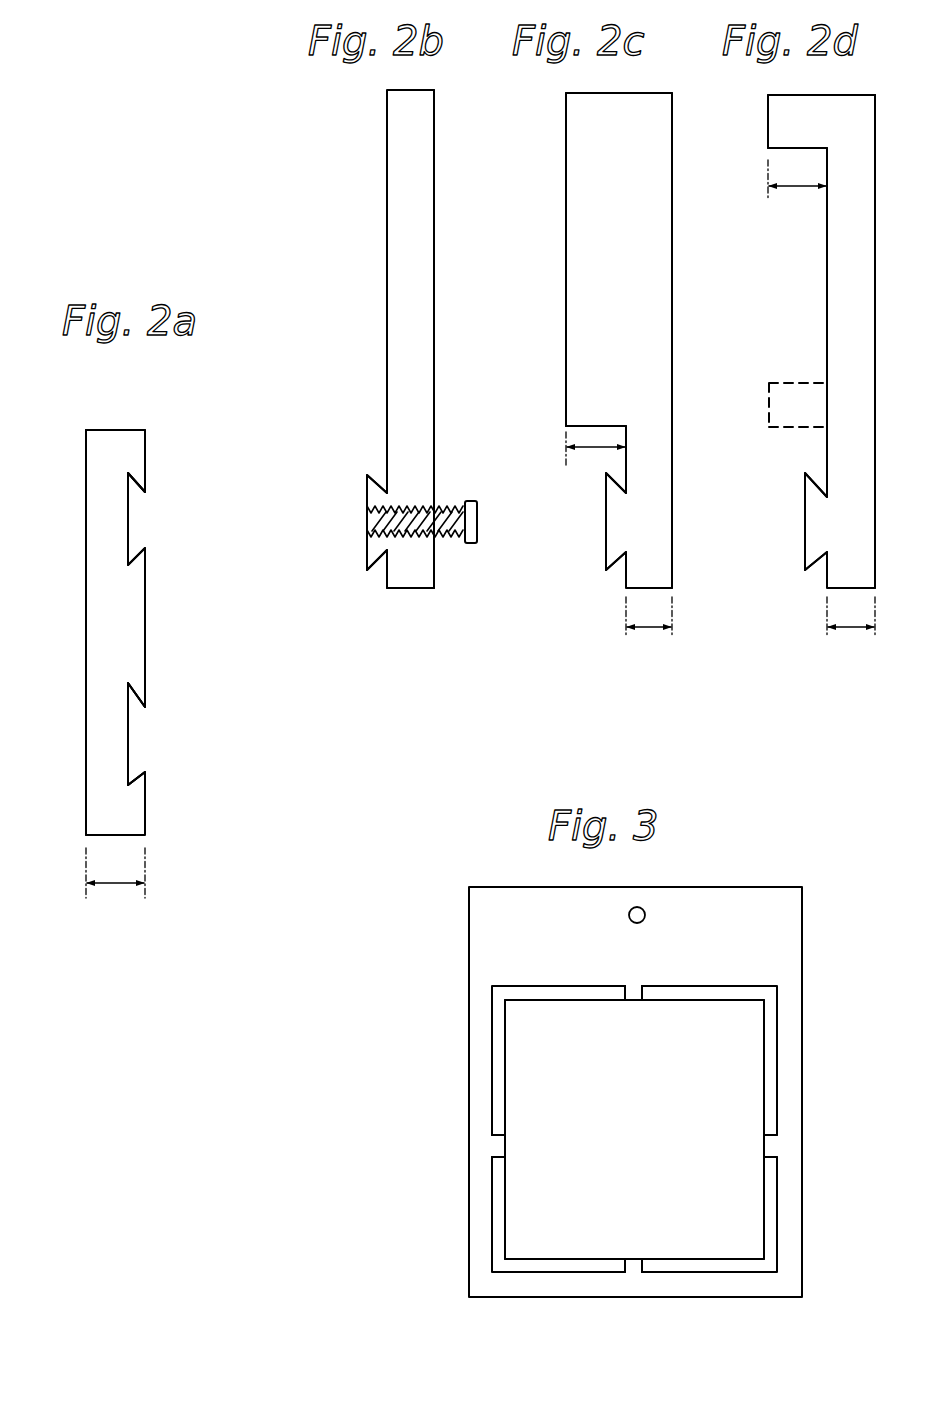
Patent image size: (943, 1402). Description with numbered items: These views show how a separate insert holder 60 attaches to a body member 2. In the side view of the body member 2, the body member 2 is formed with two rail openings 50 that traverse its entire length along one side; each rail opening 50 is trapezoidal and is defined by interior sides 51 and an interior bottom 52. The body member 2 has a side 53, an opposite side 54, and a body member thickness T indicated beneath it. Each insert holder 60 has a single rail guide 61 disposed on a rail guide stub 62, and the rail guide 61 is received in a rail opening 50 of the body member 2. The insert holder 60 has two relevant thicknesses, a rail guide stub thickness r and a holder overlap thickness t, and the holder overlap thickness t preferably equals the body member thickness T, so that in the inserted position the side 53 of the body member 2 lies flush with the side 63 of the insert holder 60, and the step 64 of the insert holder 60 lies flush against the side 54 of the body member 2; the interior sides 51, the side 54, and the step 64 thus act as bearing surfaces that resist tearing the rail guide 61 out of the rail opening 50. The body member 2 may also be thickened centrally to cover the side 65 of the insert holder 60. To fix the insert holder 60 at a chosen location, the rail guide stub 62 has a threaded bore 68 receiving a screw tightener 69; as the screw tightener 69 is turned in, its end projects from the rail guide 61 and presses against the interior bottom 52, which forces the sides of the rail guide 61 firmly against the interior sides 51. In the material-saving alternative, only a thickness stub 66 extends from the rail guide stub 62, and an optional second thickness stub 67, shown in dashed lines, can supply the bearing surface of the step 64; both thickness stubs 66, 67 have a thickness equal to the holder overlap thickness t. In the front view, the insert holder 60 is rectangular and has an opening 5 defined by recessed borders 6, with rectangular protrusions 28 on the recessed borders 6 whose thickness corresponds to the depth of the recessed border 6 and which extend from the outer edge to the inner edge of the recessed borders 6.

In FIG. 2A, the body member 2 is at (133, 628).
In FIG. 2A, the rail opening 50 is at (160, 502).
In FIG. 2A, the interior side 51 is at (134, 480).
In FIG. 2A, the interior bottom 52 is at (128, 726).
In FIG. 2A, the side of the body member 53 is at (86, 666).
In FIG. 2A, the side of the body member 54 is at (102, 430).
In FIG. 2A, the body member thickness T is at (115, 884).
In FIG. 2B, the insert holder 60 is at (348, 197).
In FIG. 2C, the insert holder 60 is at (550, 200).
In FIG. 2D, the insert holder 60 is at (795, 322).
In FIG. 3, the insert holder 60 is at (402, 1108).
In FIG. 2B, the rail guide 61 is at (356, 548).
In FIG. 2C, the rail guide 61 is at (598, 532).
In FIG. 2D, the rail guide 61 is at (795, 552).
In FIG. 2B, the rail guide stub 62 is at (435, 487).
In FIG. 2C, the rail guide stub 62 is at (672, 534).
In FIG. 2D, the rail guide stub 62 is at (827, 458).
In FIG. 2C, the side of the insert holder 63 is at (566, 307).
In FIG. 2C, the step 64 is at (590, 426).
In FIG. 2B, the side of the insert holder 65 is at (418, 589).
In FIG. 2D, the thickness stub 66 is at (768, 130).
In FIG. 2D, the thickness stub 67 is at (768, 410).
In FIG. 2B, the threaded bore 68 is at (368, 521).
In FIG. 3, the threaded bore 68 is at (628, 915).
In FIG. 2B, the screw tightener 69 is at (471, 544).
In FIG. 2C, the holder overlap thickness t is at (596, 456).
In FIG. 2D, the holder overlap thickness t is at (797, 190).
In FIG. 2C, the rail guide stub thickness r is at (649, 629).
In FIG. 2D, the rail guide stub thickness r is at (851, 629).
In FIG. 3, the opening 5 is at (648, 1123).
In FIG. 3, the recessed border 6 is at (770, 1212).
In FIG. 3, the protrusion 28 is at (492, 1166).